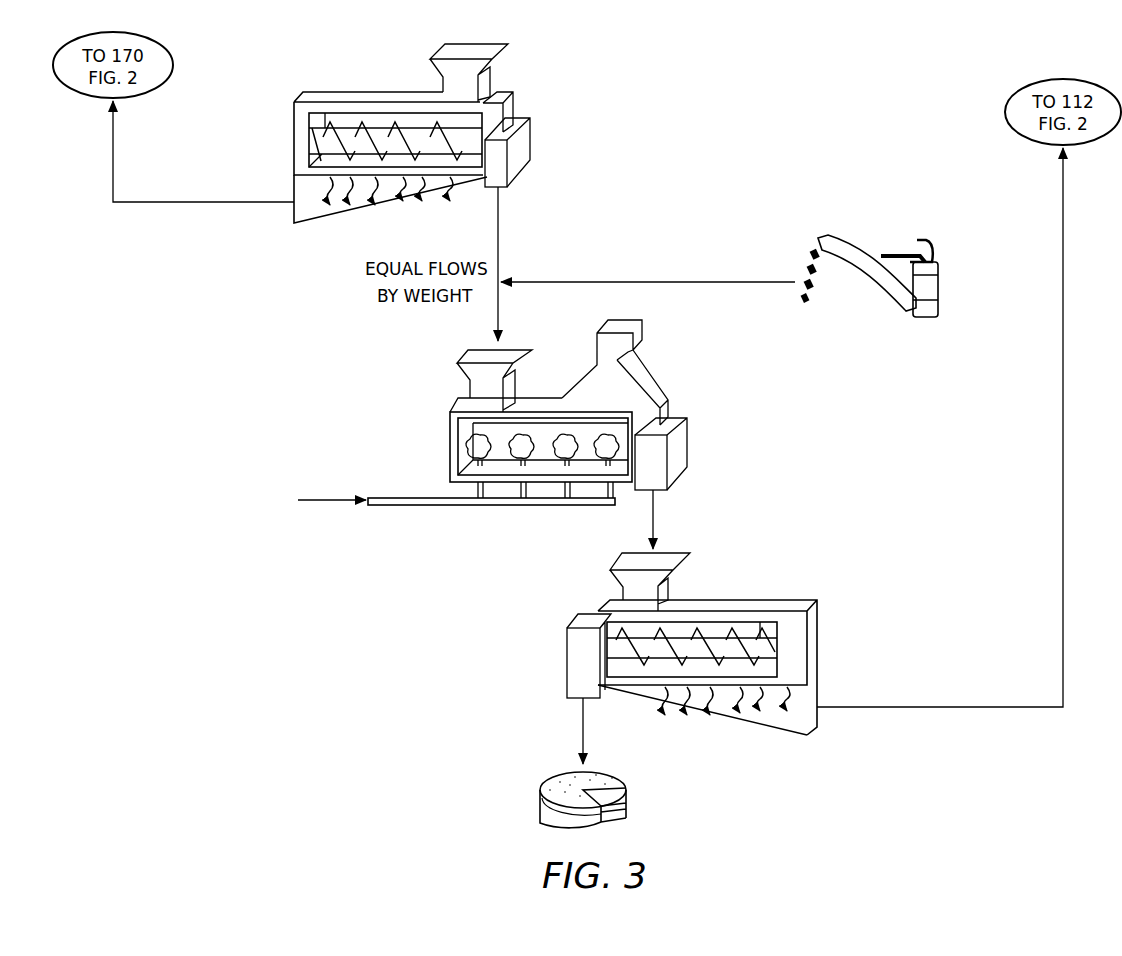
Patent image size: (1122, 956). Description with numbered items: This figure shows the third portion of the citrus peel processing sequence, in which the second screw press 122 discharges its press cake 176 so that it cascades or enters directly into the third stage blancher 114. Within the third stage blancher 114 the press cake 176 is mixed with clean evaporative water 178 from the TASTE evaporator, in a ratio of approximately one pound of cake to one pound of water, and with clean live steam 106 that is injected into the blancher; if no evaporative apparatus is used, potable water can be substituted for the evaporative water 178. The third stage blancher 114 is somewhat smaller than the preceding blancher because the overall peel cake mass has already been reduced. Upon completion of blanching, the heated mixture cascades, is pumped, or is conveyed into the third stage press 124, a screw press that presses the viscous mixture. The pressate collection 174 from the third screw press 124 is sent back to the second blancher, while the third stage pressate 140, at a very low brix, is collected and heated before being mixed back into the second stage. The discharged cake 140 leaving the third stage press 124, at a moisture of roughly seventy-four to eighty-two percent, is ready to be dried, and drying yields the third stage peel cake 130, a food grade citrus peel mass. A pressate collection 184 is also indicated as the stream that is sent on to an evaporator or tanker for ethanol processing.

The clean steam 106 is at (333, 502).
The third stage blancher 114 is at (450, 437).
The second screw press 122 is at (357, 92).
The third stage press 124 is at (747, 599).
The third stage peel cake 130 is at (542, 818).
The third stage pressate 140 is at (583, 725).
The pressate collection 174 is at (1062, 400).
The press cake 176 is at (500, 232).
The clean evaporative water 178 is at (800, 256).
The pressate collection 184 is at (796, 740).